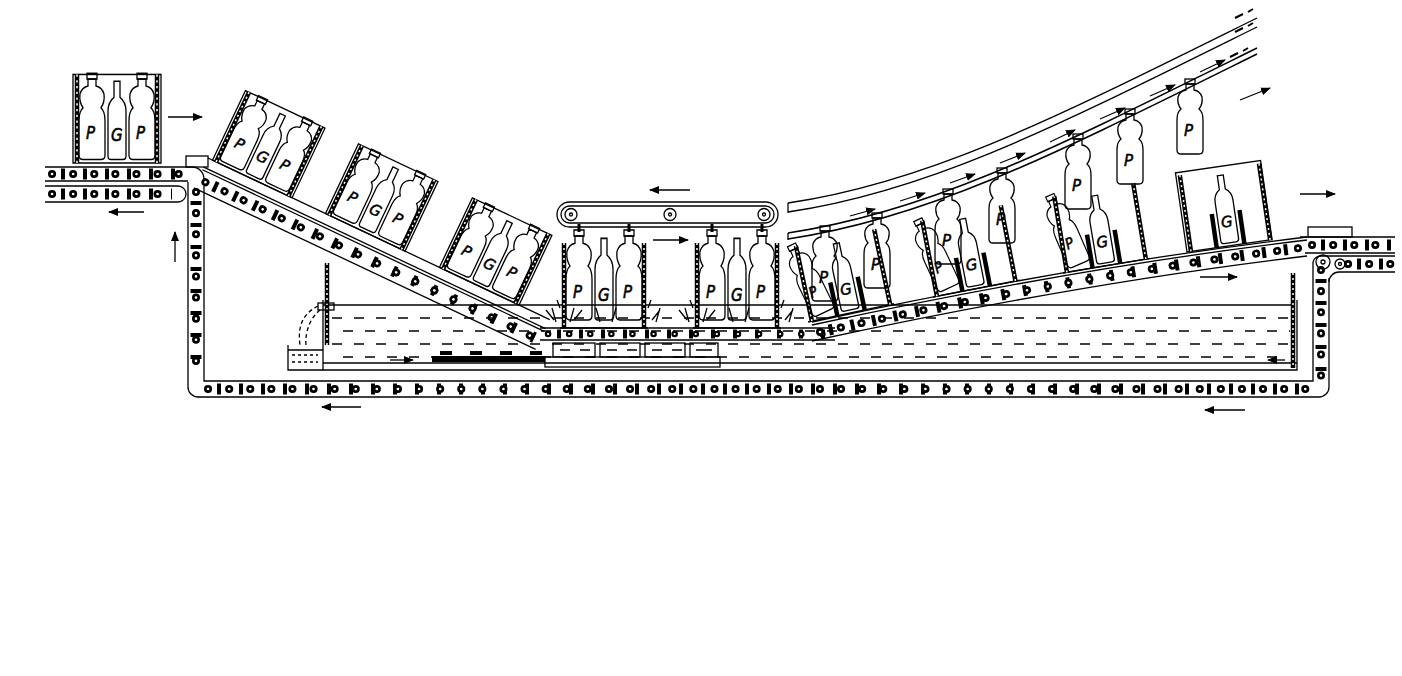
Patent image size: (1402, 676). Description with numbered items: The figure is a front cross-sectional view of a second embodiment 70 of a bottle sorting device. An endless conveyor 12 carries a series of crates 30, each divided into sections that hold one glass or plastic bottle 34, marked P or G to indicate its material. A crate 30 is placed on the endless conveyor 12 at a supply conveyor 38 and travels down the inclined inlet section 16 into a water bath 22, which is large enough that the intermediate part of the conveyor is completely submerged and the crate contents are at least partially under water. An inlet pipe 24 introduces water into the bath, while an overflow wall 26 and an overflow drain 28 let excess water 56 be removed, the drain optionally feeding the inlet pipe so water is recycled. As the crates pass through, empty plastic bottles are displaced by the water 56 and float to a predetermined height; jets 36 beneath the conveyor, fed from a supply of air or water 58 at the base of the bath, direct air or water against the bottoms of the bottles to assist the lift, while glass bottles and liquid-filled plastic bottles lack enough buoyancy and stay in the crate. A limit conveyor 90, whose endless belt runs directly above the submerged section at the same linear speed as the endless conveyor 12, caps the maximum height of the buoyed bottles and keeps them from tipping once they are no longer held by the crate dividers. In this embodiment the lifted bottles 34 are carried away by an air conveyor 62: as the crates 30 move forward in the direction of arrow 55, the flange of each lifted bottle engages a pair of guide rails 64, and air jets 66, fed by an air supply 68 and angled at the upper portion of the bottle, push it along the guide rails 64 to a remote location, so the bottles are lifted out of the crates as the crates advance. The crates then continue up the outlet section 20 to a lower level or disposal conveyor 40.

The endless conveyor 12 is at (188, 318).
The inlet section 16 is at (290, 232).
The outlet section 20 is at (1135, 292).
The water bath 22 is at (1296, 333).
The inlet pipe 24 is at (474, 365).
The overflow wall 26 is at (323, 283).
The overflow drain 28 is at (290, 355).
The crate 30 is at (160, 80).
The bottle 34 is at (266, 112).
The jets 36 is at (778, 437).
The supply conveyor 38 is at (72, 208).
The disposal conveyor 40 is at (1368, 283).
The arrow 55 is at (1302, 193).
The water 56 is at (938, 350).
The supply of air or water 58 is at (632, 341).
The air conveyor 62 is at (1045, 155).
The guide rails 64 is at (1250, 58).
The air jets 66 is at (846, 225).
The air supply 68 is at (1038, 122).
The second embodiment 70 is at (540, 72).
The limit conveyor 90 is at (723, 202).